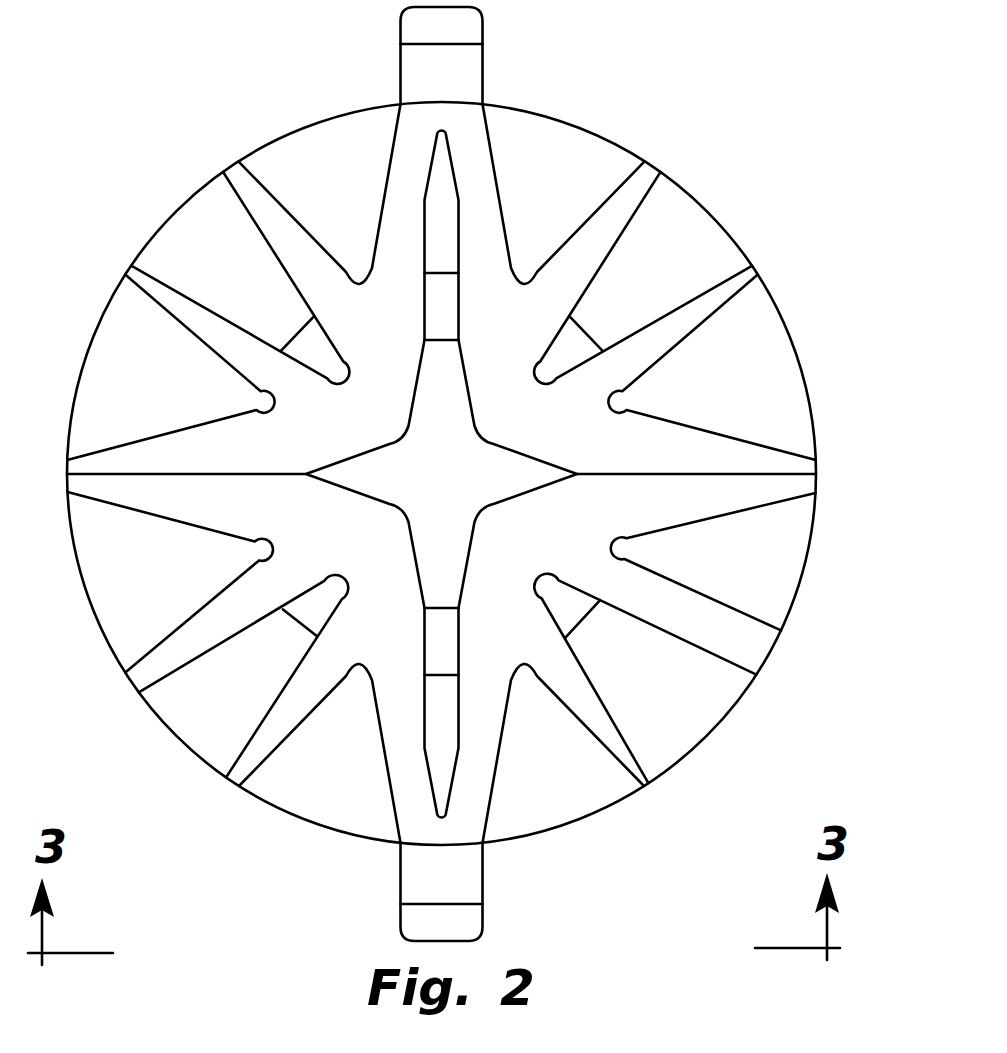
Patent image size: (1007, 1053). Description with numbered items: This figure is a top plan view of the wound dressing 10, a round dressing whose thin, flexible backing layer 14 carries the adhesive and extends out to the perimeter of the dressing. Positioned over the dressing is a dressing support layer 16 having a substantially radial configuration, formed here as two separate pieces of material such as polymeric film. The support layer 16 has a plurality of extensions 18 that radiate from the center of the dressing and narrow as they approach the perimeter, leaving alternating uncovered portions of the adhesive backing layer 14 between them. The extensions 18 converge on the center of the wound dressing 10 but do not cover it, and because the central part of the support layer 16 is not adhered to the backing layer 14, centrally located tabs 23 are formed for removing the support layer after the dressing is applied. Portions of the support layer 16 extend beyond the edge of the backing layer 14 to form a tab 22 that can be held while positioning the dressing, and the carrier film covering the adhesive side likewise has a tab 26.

The wound dressing 10 is at (715, 75).
The backing layer 14 is at (602, 157).
The dressing support layer 16 is at (806, 467).
The extensions 18 is at (652, 170).
The tab 22 is at (469, 72).
The centrally located tabs 23 is at (534, 552).
The tab 26 is at (468, 27).